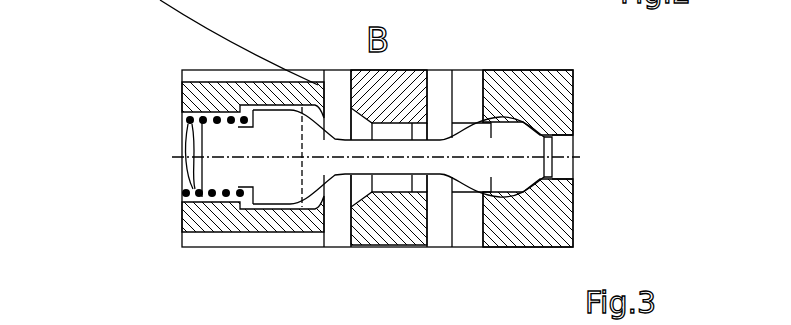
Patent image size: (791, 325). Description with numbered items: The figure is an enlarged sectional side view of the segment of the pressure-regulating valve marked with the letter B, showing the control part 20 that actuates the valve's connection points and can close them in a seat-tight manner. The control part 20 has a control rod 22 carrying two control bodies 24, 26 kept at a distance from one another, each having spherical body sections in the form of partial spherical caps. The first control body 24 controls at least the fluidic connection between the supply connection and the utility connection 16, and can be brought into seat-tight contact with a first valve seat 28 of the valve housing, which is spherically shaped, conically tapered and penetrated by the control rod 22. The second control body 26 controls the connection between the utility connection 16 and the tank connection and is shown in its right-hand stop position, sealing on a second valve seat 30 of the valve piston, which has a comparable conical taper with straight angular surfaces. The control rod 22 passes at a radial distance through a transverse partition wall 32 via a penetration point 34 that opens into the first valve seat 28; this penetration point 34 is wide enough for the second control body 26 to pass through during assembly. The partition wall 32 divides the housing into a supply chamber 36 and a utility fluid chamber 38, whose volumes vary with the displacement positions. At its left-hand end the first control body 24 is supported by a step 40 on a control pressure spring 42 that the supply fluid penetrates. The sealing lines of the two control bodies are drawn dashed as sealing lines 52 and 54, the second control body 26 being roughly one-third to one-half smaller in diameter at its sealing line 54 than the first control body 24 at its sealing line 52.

The utility connection 16 is at (492, 108).
The control part 20 is at (463, 95).
The control rod 22 is at (356, 140).
The first control body 24 is at (240, 72).
The second control body 26 is at (533, 127).
The first valve seat 28 is at (367, 218).
The second valve seat 30 is at (548, 195).
The transverse partition wall 32 is at (400, 92).
The penetration point 34 is at (422, 242).
The supply chamber 36 is at (335, 232).
The utility fluid chamber 38 is at (437, 125).
The step 40 is at (262, 205).
The control pressure spring 42 is at (183, 192).
The sealing line 52 is at (318, 147).
The sealing line 54 is at (545, 149).